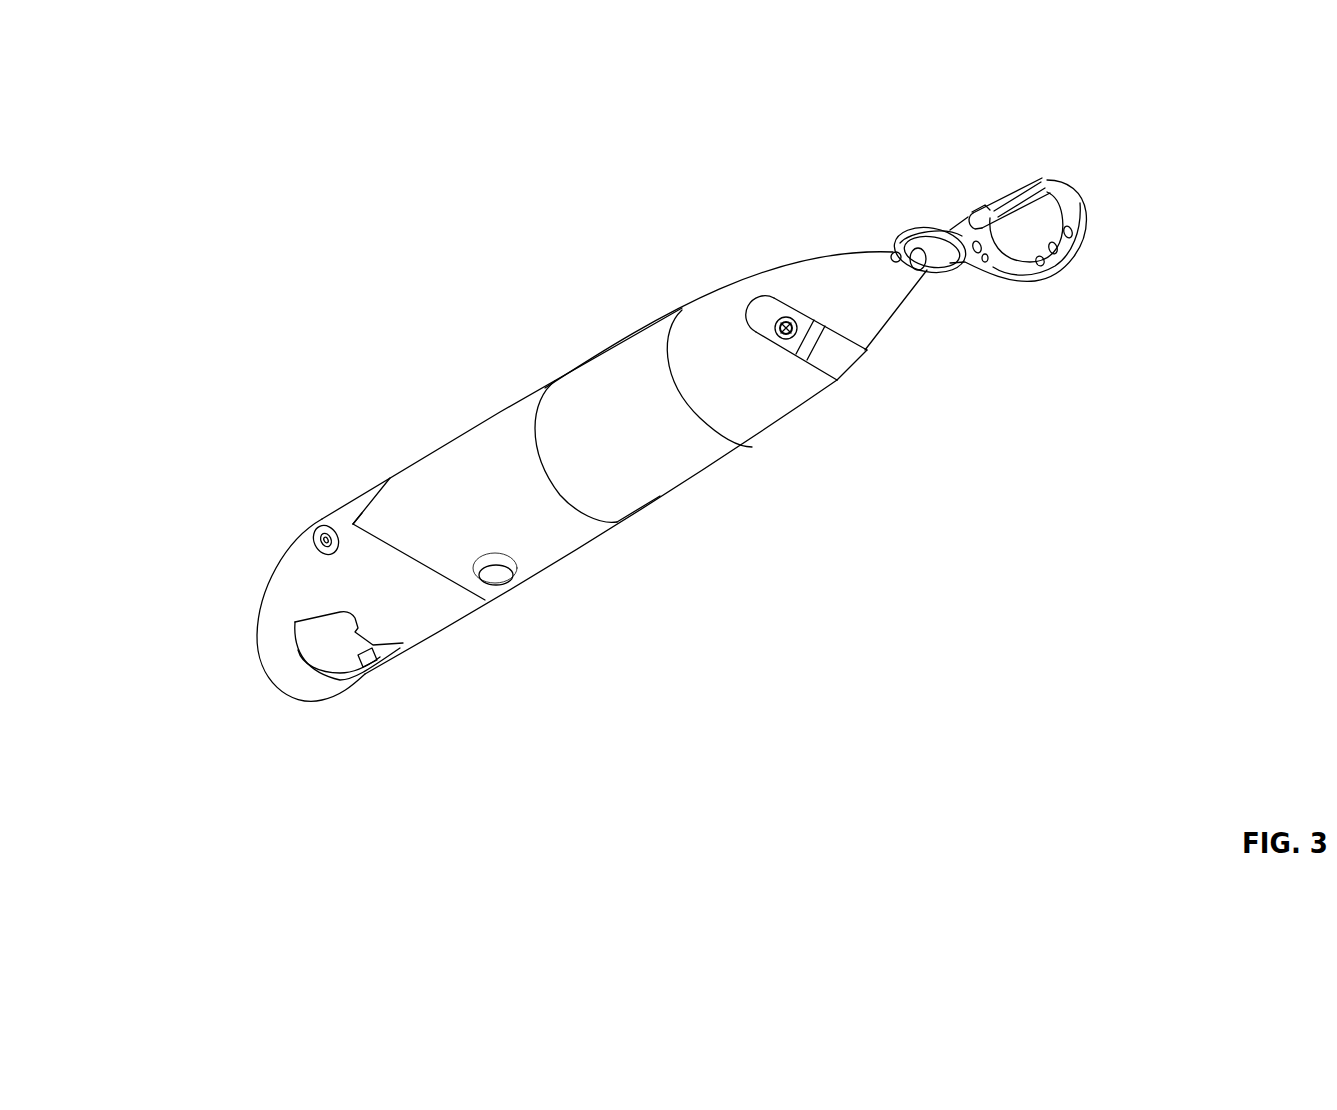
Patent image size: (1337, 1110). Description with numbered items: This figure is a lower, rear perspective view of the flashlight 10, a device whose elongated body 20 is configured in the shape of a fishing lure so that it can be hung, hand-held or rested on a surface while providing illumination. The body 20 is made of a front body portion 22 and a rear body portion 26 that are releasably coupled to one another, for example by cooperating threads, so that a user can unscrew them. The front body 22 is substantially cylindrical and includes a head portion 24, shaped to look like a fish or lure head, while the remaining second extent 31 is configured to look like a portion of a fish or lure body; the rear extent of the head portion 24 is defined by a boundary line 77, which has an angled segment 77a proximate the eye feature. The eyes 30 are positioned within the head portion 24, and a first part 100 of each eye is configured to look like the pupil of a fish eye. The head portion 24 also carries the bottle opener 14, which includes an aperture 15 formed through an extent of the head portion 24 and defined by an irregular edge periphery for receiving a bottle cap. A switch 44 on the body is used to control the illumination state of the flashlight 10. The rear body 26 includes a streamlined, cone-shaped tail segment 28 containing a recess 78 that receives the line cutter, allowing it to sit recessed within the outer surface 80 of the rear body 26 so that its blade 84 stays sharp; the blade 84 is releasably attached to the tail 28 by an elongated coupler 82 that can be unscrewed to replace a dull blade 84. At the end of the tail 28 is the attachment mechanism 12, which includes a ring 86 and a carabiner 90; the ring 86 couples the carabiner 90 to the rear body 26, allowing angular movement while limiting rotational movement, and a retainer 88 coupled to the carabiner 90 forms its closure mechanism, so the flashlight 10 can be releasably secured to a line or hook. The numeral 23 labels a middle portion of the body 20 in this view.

The flashlight 10 is at (188, 104).
The attachment mechanism 12 is at (1107, 296).
The bottle opener 14 is at (345, 658).
The aperture 15 is at (349, 646).
The elongated body 20 is at (638, 574).
The front body portion 22 is at (343, 378).
The middle body section 23 is at (670, 483).
The head portion 24 is at (287, 687).
The rear body portion 26 is at (621, 211).
The tail segment 28 is at (833, 268).
The eyes 30 is at (247, 543).
The second extent 31 is at (498, 427).
The switch 44 is at (497, 577).
The boundary line 77 is at (388, 480).
The angled segment 77a is at (353, 523).
The recess 78 is at (861, 365).
The outer surface 80 is at (767, 353).
The elongated coupler 82 is at (789, 313).
The blade 84 is at (787, 345).
The ring 86 is at (947, 273).
The retainer 88 is at (1013, 195).
The carabiner 90 is at (1078, 198).
The first part 100 is at (326, 526).